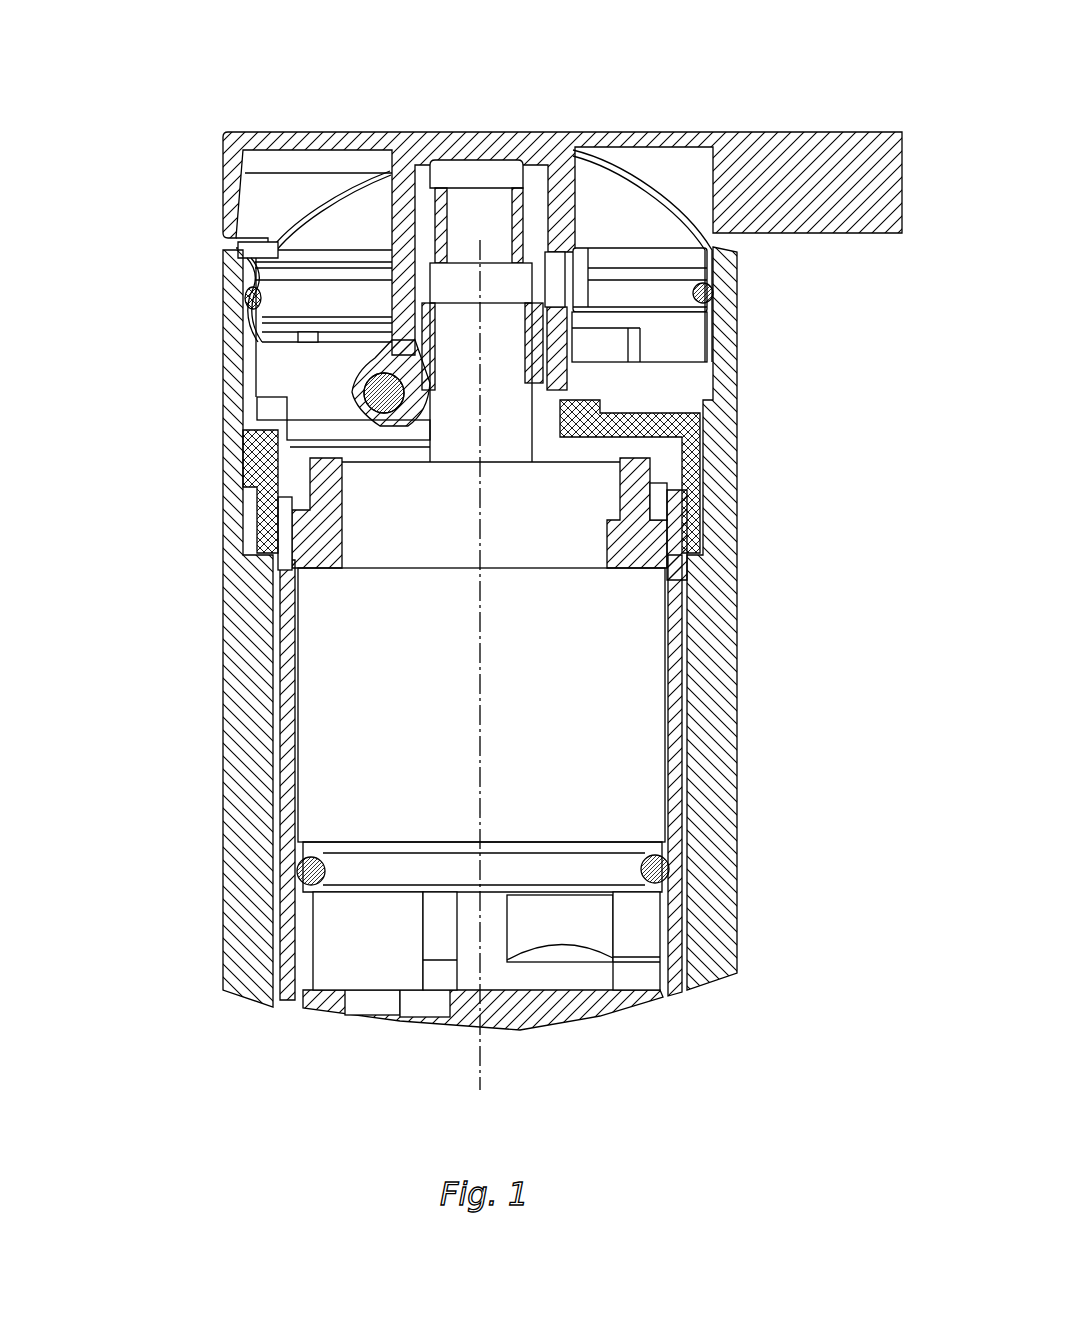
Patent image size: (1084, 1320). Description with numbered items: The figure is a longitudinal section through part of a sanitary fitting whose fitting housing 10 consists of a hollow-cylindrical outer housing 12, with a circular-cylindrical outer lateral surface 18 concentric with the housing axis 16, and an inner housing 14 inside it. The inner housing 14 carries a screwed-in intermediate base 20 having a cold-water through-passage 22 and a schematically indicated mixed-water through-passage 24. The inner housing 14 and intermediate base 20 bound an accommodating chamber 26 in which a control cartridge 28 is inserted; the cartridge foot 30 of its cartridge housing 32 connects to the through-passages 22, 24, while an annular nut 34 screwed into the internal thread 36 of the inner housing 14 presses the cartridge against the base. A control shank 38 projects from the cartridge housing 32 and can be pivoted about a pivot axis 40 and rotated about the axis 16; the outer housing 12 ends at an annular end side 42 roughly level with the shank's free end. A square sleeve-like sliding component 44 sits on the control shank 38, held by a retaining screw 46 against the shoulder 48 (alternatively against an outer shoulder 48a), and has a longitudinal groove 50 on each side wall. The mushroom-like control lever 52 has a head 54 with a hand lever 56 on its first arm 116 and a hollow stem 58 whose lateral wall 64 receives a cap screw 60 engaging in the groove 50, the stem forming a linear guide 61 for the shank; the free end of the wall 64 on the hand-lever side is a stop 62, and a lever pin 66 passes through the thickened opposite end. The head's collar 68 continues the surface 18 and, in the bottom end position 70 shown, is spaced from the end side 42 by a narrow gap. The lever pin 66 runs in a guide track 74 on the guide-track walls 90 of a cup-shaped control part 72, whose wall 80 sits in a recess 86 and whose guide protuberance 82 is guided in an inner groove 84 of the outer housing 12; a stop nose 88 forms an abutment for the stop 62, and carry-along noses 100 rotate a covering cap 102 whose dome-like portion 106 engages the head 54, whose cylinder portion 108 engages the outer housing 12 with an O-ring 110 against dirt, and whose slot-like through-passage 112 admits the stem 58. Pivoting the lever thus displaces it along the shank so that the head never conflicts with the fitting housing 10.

The fitting housing 10 is at (216, 770).
The outer housing 12 is at (235, 716).
The inner housing 14 is at (283, 690).
The housing axis 16 is at (478, 1076).
The outer lateral surface 18 is at (224, 630).
The intermediate base 20 is at (322, 990).
The cold-water through-passage 22 is at (374, 1006).
The mixed-water through-passage 24 is at (562, 1018).
The accommodating chamber 26 is at (672, 798).
The control cartridge 28 is at (316, 803).
The cartridge foot 30 is at (572, 982).
The cartridge housing 32 is at (620, 655).
The annular nut 34 is at (278, 504).
The internal thread 36 is at (279, 543).
The control shank 38 is at (573, 307).
The pivot axis 40 is at (478, 524).
The end side 42 is at (240, 252).
The sliding component 44 is at (413, 352).
The retaining screw 46 is at (493, 178).
The shoulder 48 is at (455, 178).
The outer shoulder 48a is at (562, 378).
The groove 50 is at (568, 150).
The control lever 52 is at (862, 128).
The head 54 is at (229, 135).
The hand lever 56 is at (830, 150).
The stem 58 is at (392, 226).
The cap screw 60 is at (573, 225).
The guide 61 is at (715, 276).
The stop 62 is at (520, 388).
The lateral wall 64 is at (714, 312).
The lever pin 66 is at (352, 400).
The collar 68 is at (232, 170).
The bottom end position 70 is at (872, 235).
The control part 72 is at (655, 412).
The guide track 74 is at (300, 367).
The wall 80 is at (705, 525).
The guide protuberance 82 is at (248, 458).
The inner groove 84 is at (708, 463).
The recess 86 is at (330, 426).
The stop nose 88 is at (722, 437).
The guide-track walls 90 is at (345, 372).
The carry-along noses 100 is at (240, 310).
The covering cap 102 is at (672, 194).
The dome-like portion 106 is at (610, 168).
The cylinder portion 108 is at (720, 340).
The O-ring 110 is at (245, 296).
The slot-like through-passage 112 is at (328, 198).
The first arm 116 is at (392, 136).